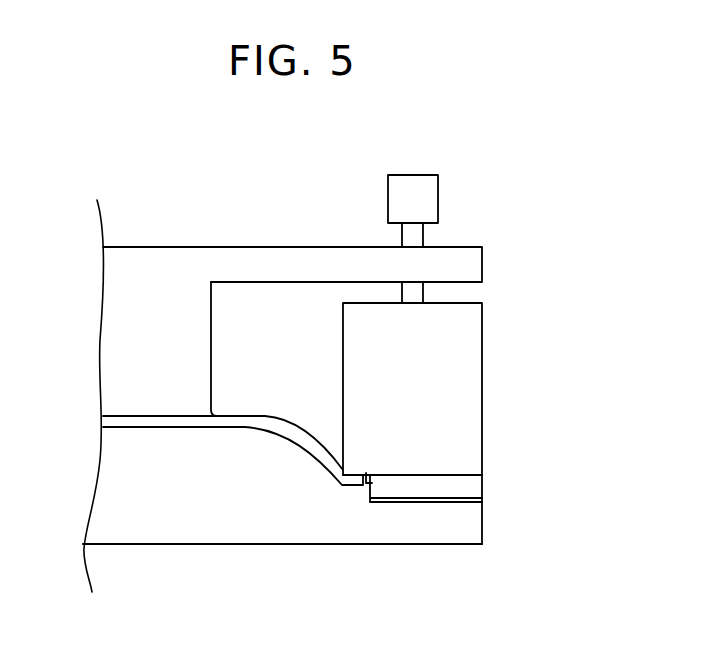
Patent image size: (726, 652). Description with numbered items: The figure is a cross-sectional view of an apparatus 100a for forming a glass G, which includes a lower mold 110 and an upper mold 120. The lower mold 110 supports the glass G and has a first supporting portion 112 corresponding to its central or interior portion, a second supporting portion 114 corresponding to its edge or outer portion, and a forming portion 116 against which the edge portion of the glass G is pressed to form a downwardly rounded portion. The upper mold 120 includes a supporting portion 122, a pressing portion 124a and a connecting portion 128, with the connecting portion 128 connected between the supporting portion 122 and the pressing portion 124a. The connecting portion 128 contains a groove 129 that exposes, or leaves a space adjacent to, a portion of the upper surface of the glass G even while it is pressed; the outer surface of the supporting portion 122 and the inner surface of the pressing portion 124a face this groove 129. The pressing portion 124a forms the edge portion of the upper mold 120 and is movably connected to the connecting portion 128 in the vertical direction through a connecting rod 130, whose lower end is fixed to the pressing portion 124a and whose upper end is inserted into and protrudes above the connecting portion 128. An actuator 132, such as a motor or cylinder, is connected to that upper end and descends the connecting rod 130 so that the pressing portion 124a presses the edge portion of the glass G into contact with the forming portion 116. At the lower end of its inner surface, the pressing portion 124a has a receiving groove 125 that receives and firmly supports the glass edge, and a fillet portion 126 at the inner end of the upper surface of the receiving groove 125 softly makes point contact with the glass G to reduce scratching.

The apparatus for forming a glass 100a is at (92, 169).
The lower mold 110 is at (440, 599).
The first supporting portion 112 is at (212, 472).
The second supporting portion 114 is at (418, 535).
The forming portion 116 is at (317, 460).
The upper mold 120 is at (305, 186).
The supporting portion 122 is at (171, 300).
The pressing portion 124a is at (462, 351).
The receiving groove 125 is at (372, 477).
The fillet portion 126 is at (352, 471).
The connecting portion 128 is at (282, 262).
The groove 129 is at (321, 386).
The connecting rod 130 is at (418, 238).
The actuator 132 is at (430, 203).
The glass G is at (148, 421).